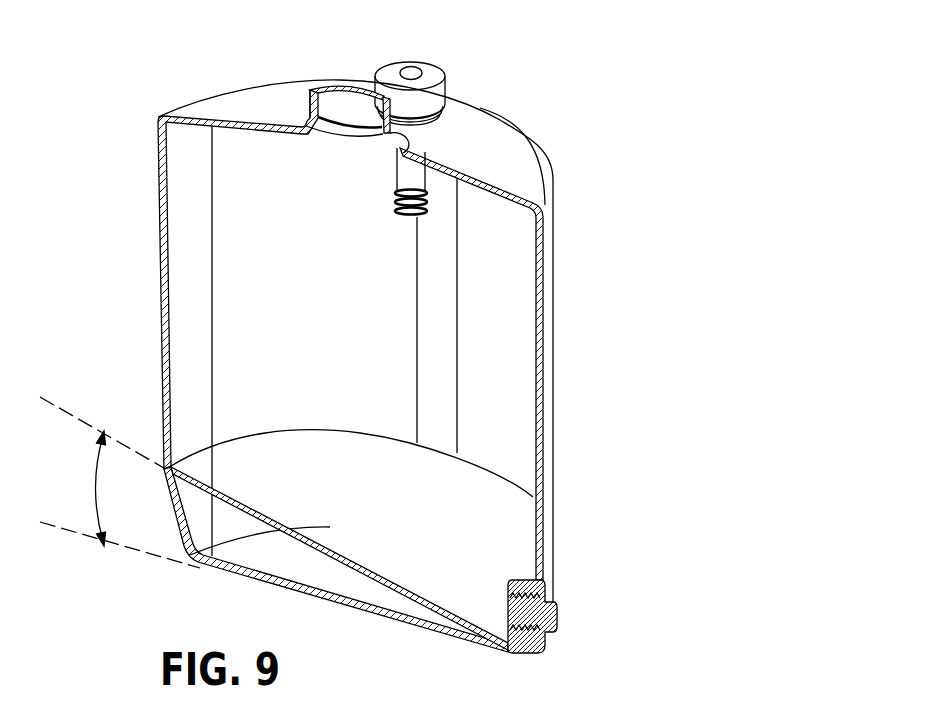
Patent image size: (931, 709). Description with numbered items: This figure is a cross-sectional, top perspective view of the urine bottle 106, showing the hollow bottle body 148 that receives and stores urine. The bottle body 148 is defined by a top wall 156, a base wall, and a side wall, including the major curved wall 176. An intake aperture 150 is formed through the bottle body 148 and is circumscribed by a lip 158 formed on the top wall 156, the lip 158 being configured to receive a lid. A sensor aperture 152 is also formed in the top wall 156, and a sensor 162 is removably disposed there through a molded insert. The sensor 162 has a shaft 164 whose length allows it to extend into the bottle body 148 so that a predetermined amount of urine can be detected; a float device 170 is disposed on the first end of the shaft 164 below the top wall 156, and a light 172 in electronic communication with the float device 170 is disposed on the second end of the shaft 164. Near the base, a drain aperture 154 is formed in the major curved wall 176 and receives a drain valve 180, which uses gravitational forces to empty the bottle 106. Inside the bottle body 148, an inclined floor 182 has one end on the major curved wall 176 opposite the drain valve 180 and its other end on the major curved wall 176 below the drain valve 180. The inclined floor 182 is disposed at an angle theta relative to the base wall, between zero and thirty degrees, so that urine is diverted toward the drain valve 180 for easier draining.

The urine bottle 106 is at (554, 64).
The bottle body 148 is at (553, 352).
The intake aperture 150 is at (343, 90).
The sensor aperture 152 is at (443, 107).
The drain aperture 154 is at (507, 607).
The top wall 156 is at (527, 193).
The lip 158 is at (312, 100).
The sensor 162 is at (440, 64).
The shaft 164 is at (405, 173).
The float device 170 is at (397, 207).
The light 172 is at (408, 66).
The major curved wall 176 is at (553, 410).
The drain valve 180 is at (553, 607).
The inclined floor 182 is at (471, 605).